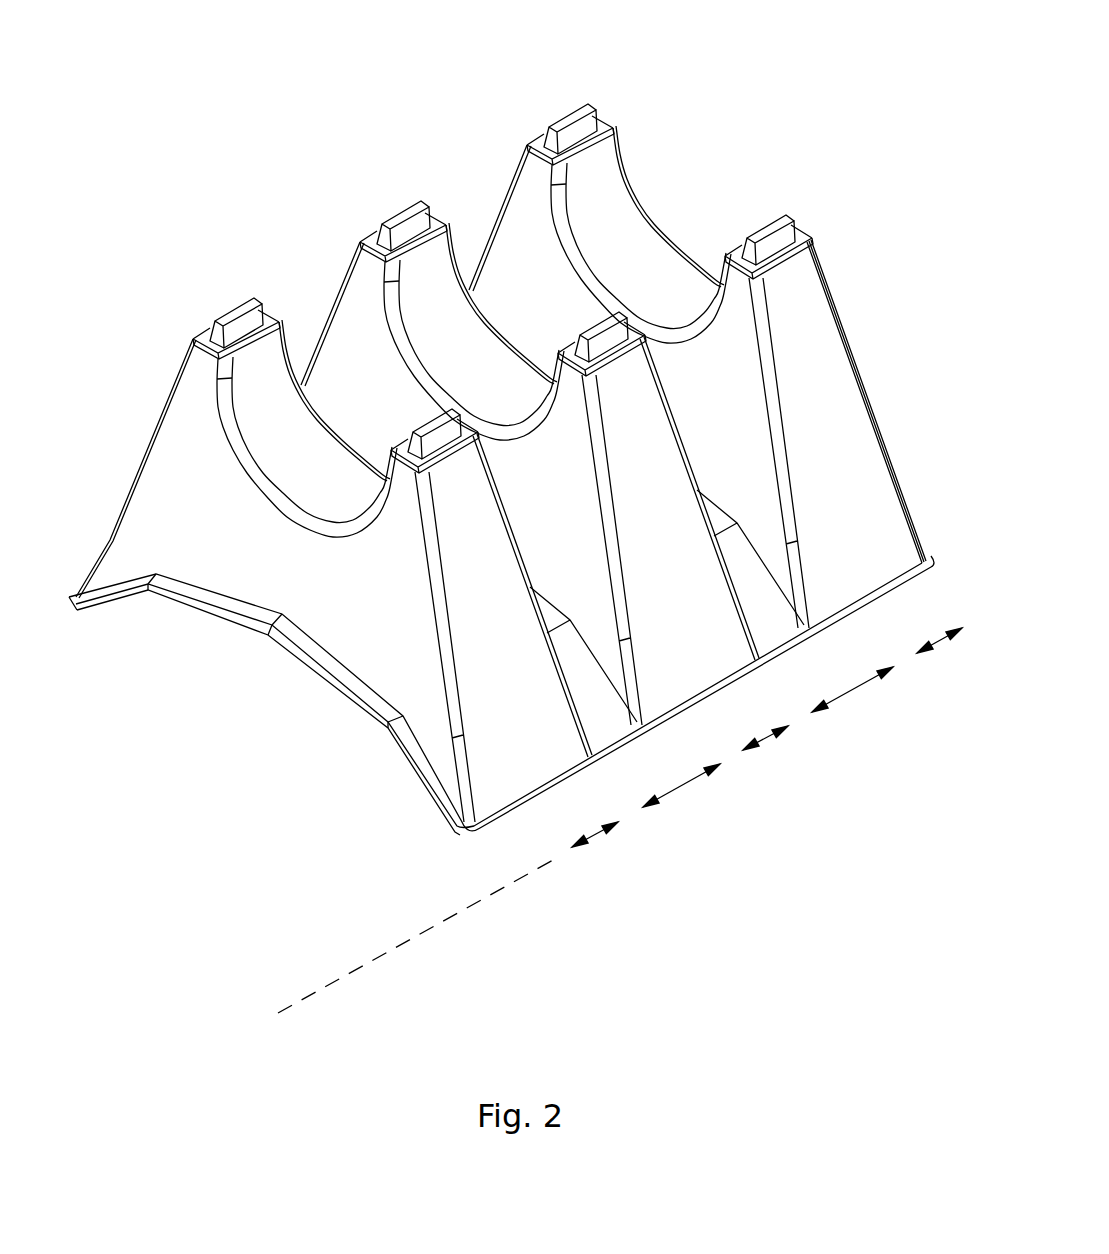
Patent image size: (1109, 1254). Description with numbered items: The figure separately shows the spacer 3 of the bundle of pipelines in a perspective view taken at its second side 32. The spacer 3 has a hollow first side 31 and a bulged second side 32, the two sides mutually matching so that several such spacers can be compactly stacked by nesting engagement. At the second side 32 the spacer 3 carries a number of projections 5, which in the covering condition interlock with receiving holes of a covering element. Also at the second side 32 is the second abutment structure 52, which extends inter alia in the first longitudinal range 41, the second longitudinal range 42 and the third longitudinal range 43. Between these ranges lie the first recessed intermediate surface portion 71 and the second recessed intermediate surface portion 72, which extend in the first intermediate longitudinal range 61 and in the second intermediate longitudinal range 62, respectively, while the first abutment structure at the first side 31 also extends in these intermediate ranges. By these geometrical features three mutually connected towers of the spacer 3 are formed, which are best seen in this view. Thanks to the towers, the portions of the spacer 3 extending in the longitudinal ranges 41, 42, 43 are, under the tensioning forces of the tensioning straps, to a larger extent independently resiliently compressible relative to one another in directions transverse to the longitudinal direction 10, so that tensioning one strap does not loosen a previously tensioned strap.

The spacer 3 is at (273, 140).
The first side 31 is at (252, 692).
The second side 32 is at (688, 110).
The projection 5 is at (237, 312).
The second abutment structure 52 is at (290, 468).
The first recessed intermediate surface portion 71 is at (593, 710).
The second recessed intermediate surface portion 72 is at (760, 613).
The first longitudinal range 41 is at (593, 835).
The second longitudinal range 42 is at (767, 738).
The third longitudinal range 43 is at (942, 643).
The first intermediate longitudinal range 61 is at (680, 787).
The second intermediate longitudinal range 62 is at (853, 690).
The longitudinal direction 10 is at (327, 983).